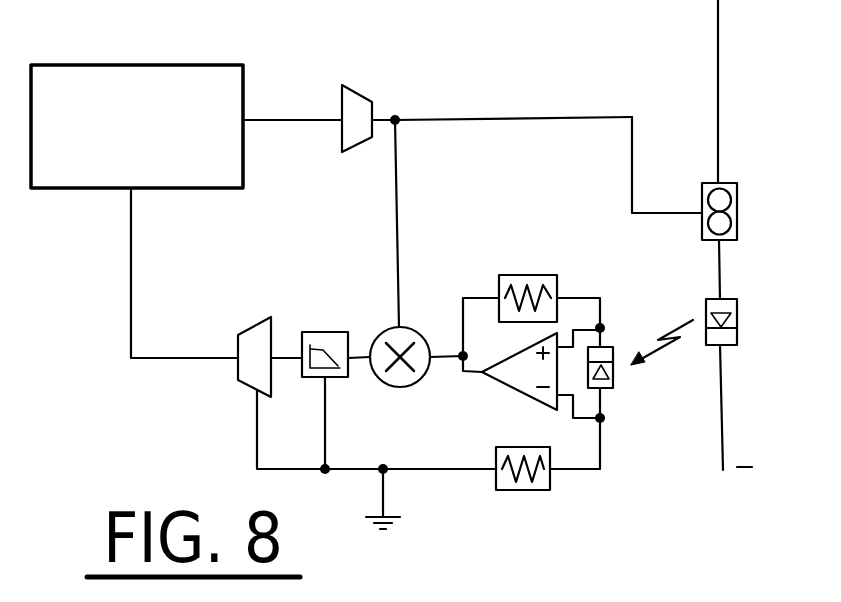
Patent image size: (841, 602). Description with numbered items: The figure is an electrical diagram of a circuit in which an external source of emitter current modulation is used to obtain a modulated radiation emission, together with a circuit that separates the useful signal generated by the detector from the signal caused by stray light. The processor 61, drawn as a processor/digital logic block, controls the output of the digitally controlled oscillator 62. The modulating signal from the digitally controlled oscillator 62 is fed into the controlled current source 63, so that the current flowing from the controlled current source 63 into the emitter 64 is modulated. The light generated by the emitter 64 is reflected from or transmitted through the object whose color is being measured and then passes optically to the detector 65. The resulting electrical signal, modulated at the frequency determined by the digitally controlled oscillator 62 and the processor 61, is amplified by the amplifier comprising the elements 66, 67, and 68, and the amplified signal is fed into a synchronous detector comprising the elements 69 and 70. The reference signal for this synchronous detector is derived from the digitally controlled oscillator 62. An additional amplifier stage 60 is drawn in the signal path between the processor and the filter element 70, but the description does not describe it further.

The amplifier 60 is at (243, 336).
The processor 61 is at (245, 168).
The digitally controlled oscillator 62 is at (358, 92).
The controlled current source 63 is at (725, 183).
The emitter 64 is at (737, 307).
The detector 65 is at (613, 385).
The amplifier element 66 is at (540, 490).
The amplifier element 67 is at (520, 275).
The amplifier element 68 is at (510, 387).
The synchronous detector element 69 is at (413, 330).
The synchronous detector element 70 is at (327, 332).